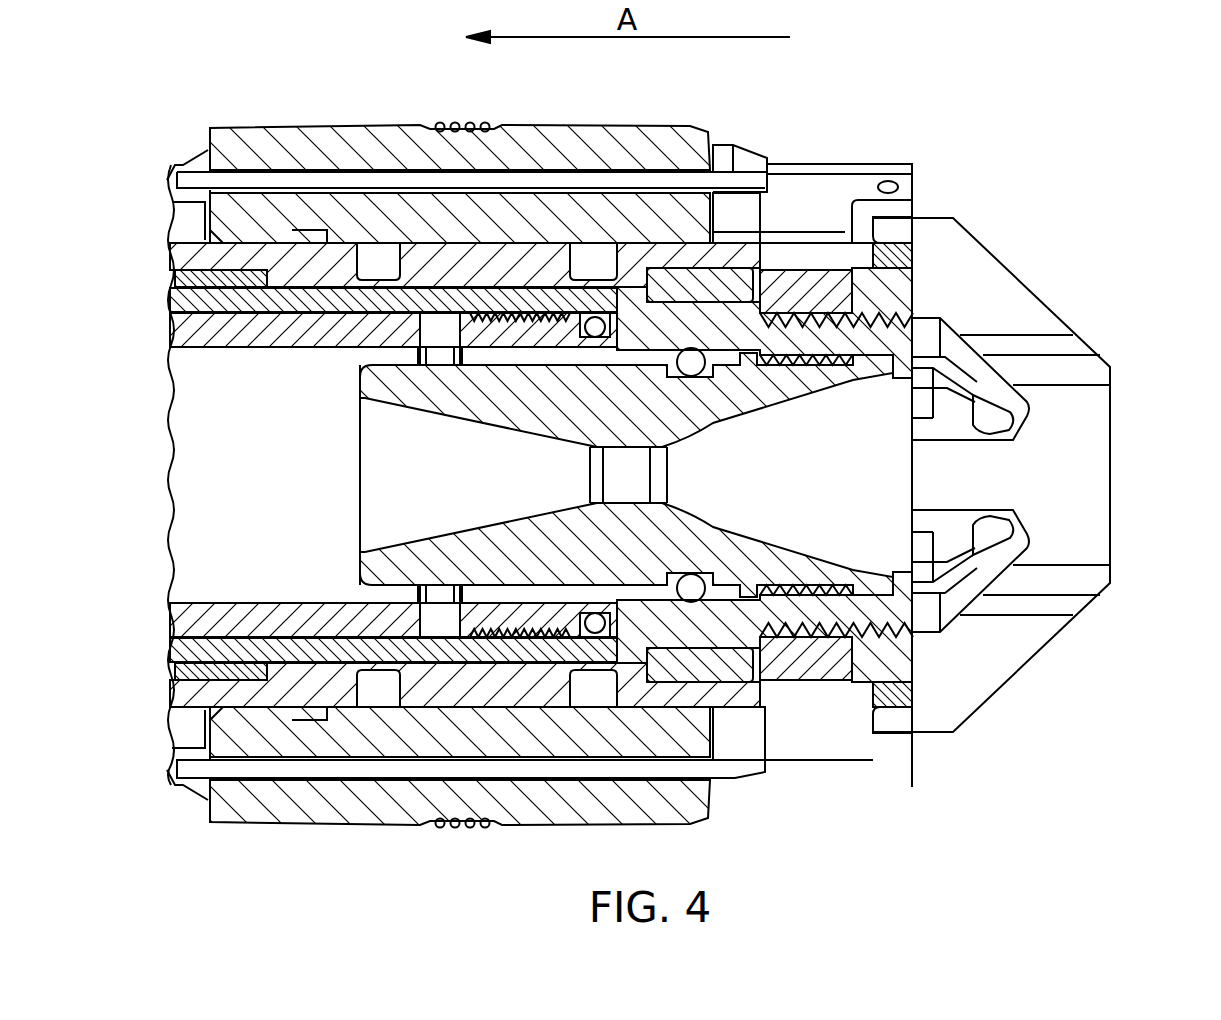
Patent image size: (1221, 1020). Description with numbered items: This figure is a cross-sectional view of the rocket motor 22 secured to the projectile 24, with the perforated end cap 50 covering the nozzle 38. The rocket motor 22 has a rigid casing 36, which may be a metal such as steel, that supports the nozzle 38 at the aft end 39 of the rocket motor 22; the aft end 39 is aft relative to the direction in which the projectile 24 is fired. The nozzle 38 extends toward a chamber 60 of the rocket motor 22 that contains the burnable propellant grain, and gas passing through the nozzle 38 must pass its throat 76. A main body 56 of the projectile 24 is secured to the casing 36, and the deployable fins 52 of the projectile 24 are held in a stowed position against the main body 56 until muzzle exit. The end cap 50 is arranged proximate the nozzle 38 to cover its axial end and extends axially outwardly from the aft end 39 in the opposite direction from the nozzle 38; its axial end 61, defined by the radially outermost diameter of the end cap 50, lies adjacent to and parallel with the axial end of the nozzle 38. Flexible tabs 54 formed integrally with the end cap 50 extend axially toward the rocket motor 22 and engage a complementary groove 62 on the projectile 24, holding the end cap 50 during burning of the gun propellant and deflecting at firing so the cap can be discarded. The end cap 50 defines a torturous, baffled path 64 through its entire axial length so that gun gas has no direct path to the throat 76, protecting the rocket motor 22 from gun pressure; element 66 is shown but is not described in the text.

The rocket motor 22 is at (330, 300).
The projectile 24 is at (790, 265).
The rigid casing 36 is at (480, 300).
The nozzle 38 is at (812, 427).
The aft end 39 is at (803, 600).
The perforated end cap 50 is at (992, 300).
The deployable wings or fins 52 is at (690, 178).
The flexible tabs 54 is at (897, 718).
The main body 56 is at (548, 265).
The chamber 60 is at (222, 388).
The axial end 61 is at (913, 477).
The complementary groove 62 is at (890, 695).
The baffled path 64 is at (960, 597).
The hex body 66 is at (1067, 590).
The throat 76 is at (623, 480).